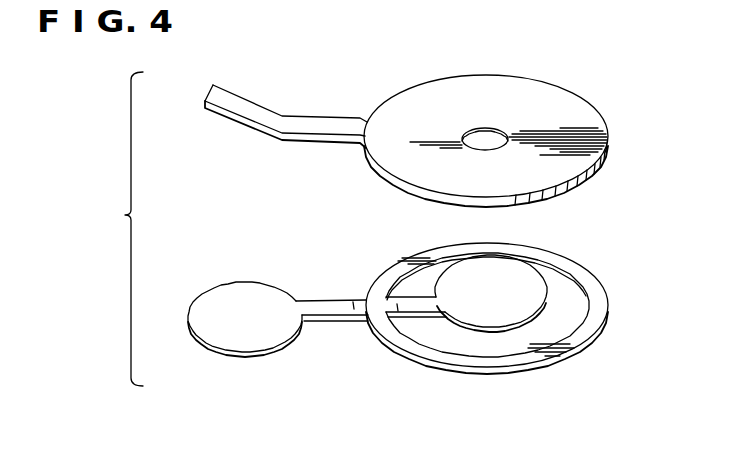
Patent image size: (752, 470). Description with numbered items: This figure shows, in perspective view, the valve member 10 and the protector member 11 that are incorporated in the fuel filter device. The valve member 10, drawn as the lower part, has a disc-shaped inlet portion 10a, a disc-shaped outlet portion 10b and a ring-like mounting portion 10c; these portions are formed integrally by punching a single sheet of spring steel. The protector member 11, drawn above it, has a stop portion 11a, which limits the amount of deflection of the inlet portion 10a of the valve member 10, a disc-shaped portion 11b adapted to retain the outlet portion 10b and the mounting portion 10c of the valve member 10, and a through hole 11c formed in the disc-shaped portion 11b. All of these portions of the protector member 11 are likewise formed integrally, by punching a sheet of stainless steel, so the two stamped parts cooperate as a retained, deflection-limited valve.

The valve member 10 is at (429, 298).
The inlet portion 10a is at (272, 298).
The outlet portion 10b is at (525, 273).
The mounting portion 10c is at (607, 307).
The protector member 11 is at (573, 107).
The stop portion 11a is at (266, 111).
The disc-shaped portion 11b is at (608, 137).
The through hole 11c is at (487, 129).